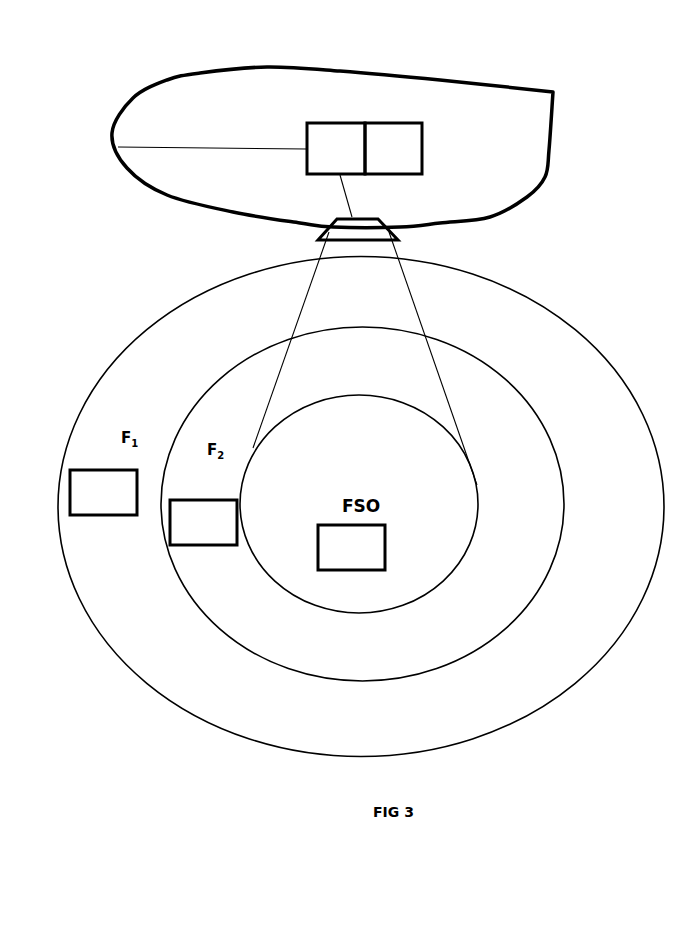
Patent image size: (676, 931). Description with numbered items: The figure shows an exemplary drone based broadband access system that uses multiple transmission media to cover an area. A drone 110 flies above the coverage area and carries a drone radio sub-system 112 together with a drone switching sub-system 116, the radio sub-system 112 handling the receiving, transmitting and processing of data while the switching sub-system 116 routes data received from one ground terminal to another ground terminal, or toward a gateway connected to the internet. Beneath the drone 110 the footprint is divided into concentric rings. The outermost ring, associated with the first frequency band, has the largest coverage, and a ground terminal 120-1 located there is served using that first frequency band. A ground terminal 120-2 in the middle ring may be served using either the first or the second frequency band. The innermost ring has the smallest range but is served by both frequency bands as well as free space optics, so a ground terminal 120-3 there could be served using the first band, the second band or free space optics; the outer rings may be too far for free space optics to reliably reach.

The drone 110 is at (200, 68).
The drone radio sub-system 112 is at (305, 132).
The drone switching sub-system 116 is at (424, 157).
The ground terminal 120-1 is at (103, 492).
The ground terminal 120-2 is at (203, 522).
The ground terminal 120-3 is at (351, 547).